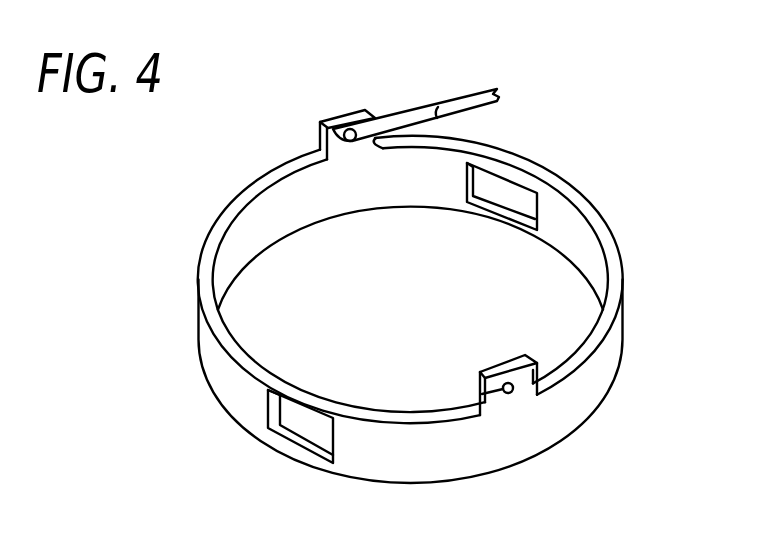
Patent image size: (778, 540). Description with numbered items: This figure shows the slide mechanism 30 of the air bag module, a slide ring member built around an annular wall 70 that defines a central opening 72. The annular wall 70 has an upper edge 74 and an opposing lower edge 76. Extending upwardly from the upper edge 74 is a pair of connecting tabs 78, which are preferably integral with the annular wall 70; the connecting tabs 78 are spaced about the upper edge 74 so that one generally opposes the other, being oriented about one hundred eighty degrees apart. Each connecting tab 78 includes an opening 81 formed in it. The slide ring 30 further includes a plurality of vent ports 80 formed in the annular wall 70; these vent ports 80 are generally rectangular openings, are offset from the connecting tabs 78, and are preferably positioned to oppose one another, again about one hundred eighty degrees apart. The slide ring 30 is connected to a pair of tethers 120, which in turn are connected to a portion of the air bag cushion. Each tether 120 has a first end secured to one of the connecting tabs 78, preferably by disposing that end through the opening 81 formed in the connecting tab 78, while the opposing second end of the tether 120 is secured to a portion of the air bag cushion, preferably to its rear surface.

The slide mechanism 30 is at (420, 199).
The annular wall 70 is at (217, 360).
The central opening 72 is at (288, 278).
The upper edge 74 is at (199, 281).
The lower edge 76 is at (247, 423).
The connecting tab 78 is at (318, 148).
The vent port 80 is at (310, 423).
The opening 81 is at (322, 121).
The tether 120 is at (415, 110).